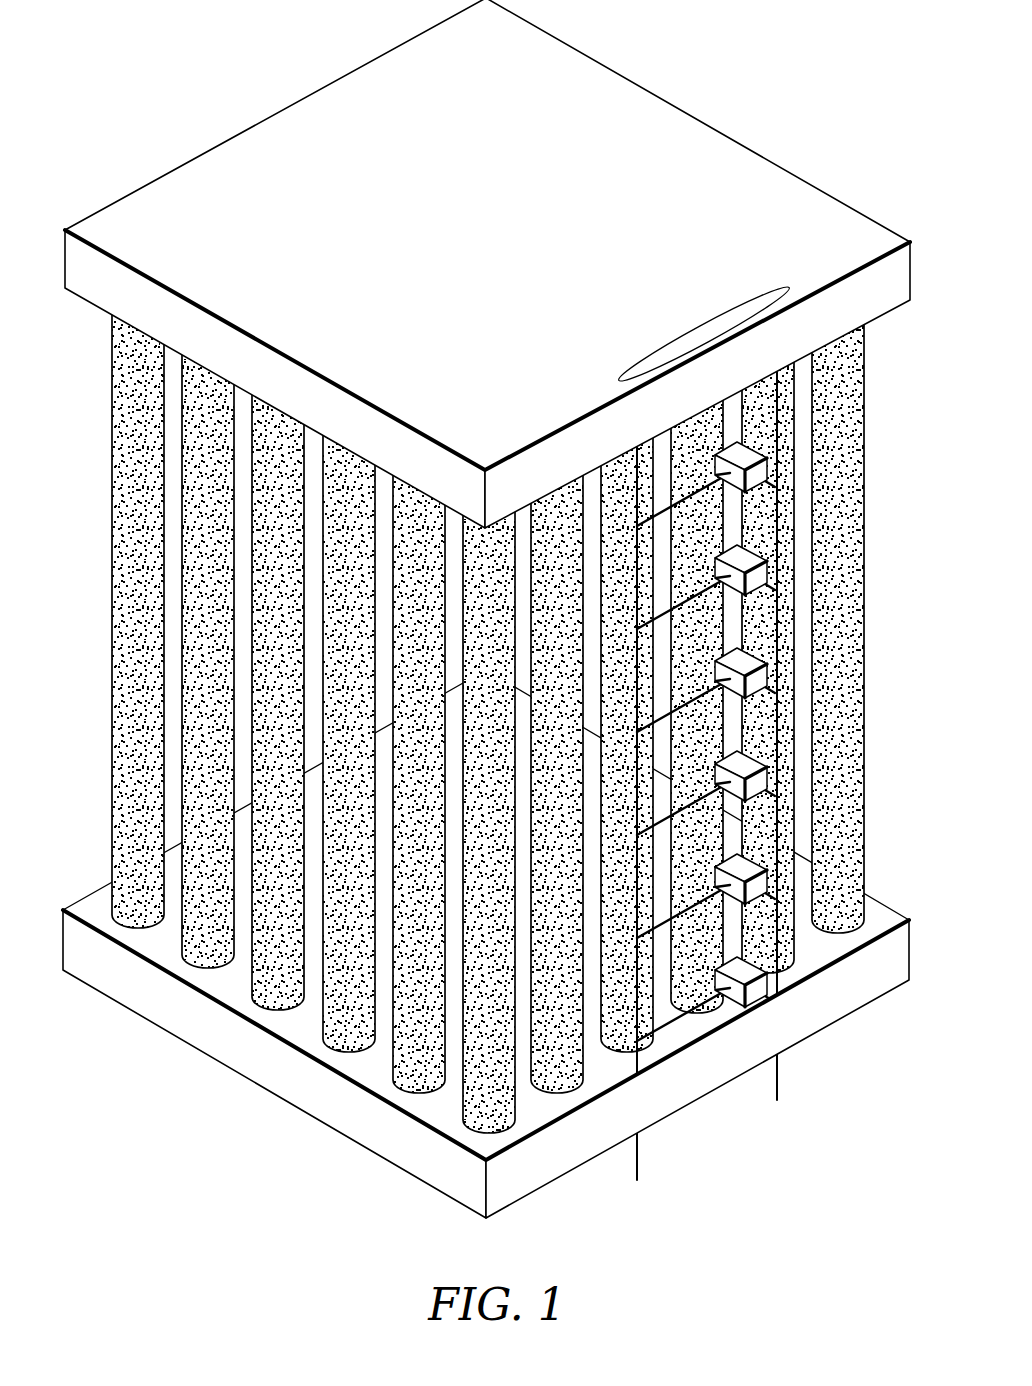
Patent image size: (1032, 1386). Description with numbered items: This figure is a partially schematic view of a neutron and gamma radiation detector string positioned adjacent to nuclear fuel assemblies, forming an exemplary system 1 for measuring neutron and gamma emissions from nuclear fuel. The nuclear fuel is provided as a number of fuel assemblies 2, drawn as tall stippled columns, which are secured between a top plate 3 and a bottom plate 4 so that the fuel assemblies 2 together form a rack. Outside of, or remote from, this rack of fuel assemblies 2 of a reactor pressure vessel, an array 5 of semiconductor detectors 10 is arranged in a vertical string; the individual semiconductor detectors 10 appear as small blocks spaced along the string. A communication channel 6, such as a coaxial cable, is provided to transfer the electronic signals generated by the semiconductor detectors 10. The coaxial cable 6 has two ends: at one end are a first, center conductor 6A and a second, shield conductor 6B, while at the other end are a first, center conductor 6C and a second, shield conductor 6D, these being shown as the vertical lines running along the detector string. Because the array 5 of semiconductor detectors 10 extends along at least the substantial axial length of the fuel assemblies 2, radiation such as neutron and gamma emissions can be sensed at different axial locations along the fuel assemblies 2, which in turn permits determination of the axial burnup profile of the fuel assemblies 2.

The system 1 is at (246, 110).
The fuel assembly 2 is at (116, 555).
The top plate 3 is at (97, 284).
The bottom plate 4 is at (93, 966).
The array 5 is at (772, 676).
The communication channel 6 is at (622, 380).
The first (center) conductor 6A is at (776, 266).
The second (shield) conductor 6B is at (636, 331).
The first (center) conductor 6C is at (778, 1088).
The second (shield) conductor 6D is at (636, 1168).
The semiconductor detector 10 is at (746, 458).